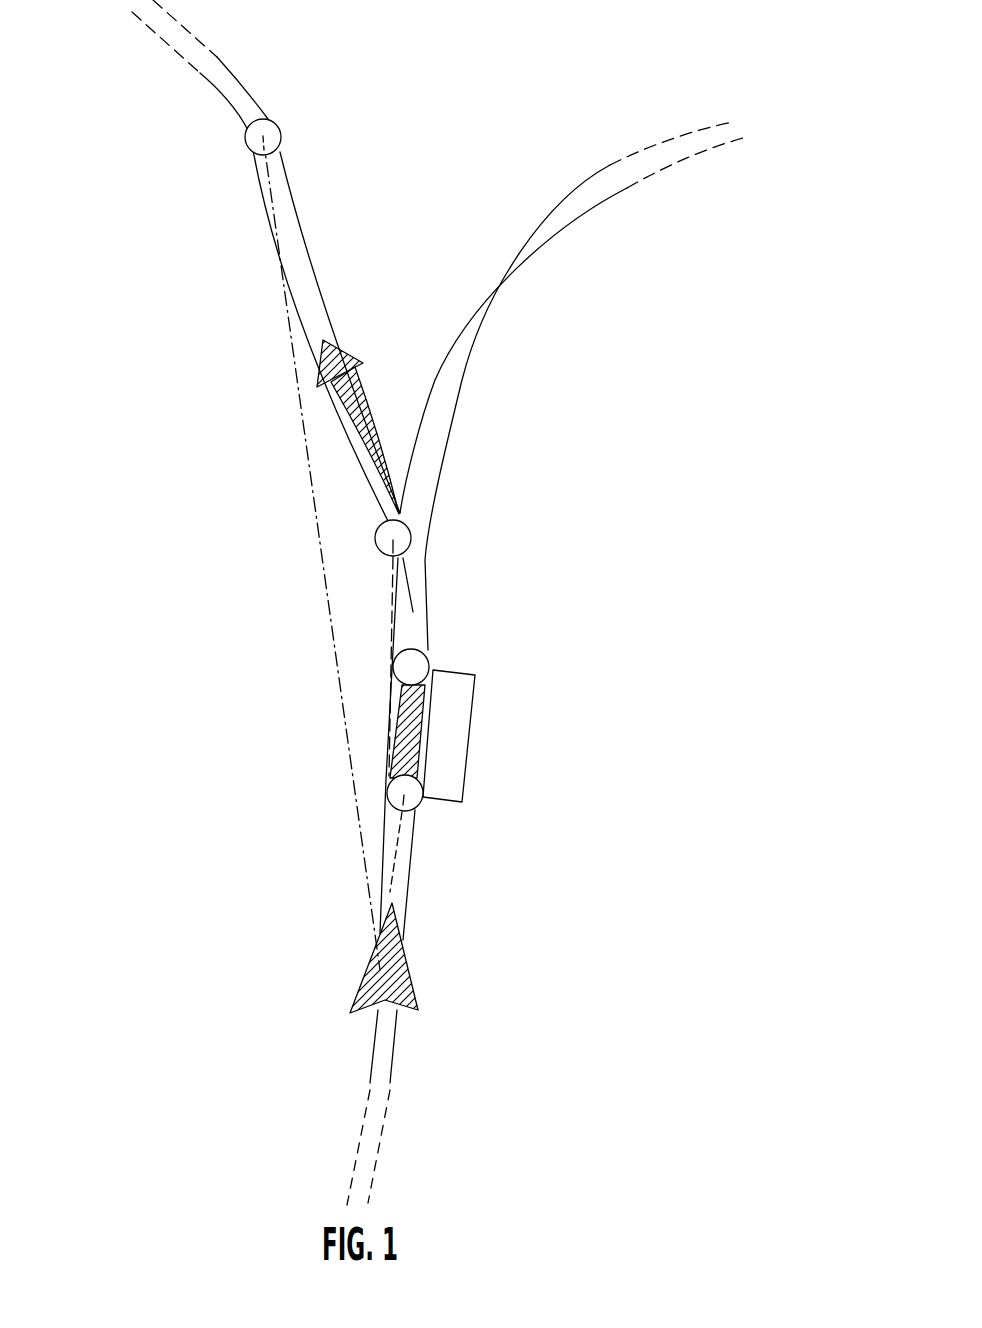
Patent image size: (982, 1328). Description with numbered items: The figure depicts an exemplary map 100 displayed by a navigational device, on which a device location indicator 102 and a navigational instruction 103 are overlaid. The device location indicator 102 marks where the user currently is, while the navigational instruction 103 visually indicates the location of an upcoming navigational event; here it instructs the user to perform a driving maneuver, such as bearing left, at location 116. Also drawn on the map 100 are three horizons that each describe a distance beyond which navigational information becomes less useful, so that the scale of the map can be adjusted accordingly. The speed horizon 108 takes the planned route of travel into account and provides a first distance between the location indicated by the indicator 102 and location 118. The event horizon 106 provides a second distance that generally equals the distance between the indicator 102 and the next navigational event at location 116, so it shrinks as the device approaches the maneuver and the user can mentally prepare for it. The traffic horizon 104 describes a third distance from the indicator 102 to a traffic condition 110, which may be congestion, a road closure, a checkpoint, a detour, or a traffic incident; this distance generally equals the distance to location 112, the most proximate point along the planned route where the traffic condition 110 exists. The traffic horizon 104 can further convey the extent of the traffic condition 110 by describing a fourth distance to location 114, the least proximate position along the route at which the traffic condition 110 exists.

The map 100 is at (665, 356).
The device location indicator 102 is at (360, 989).
The navigational instruction 103 is at (342, 362).
The traffic horizon 104 is at (402, 868).
The event horizon 106 is at (390, 650).
The speed horizon 108 is at (288, 313).
The traffic condition 110 is at (473, 738).
The location 112 is at (422, 805).
The location 114 is at (432, 658).
The location 116 is at (405, 520).
The location 118 is at (282, 135).